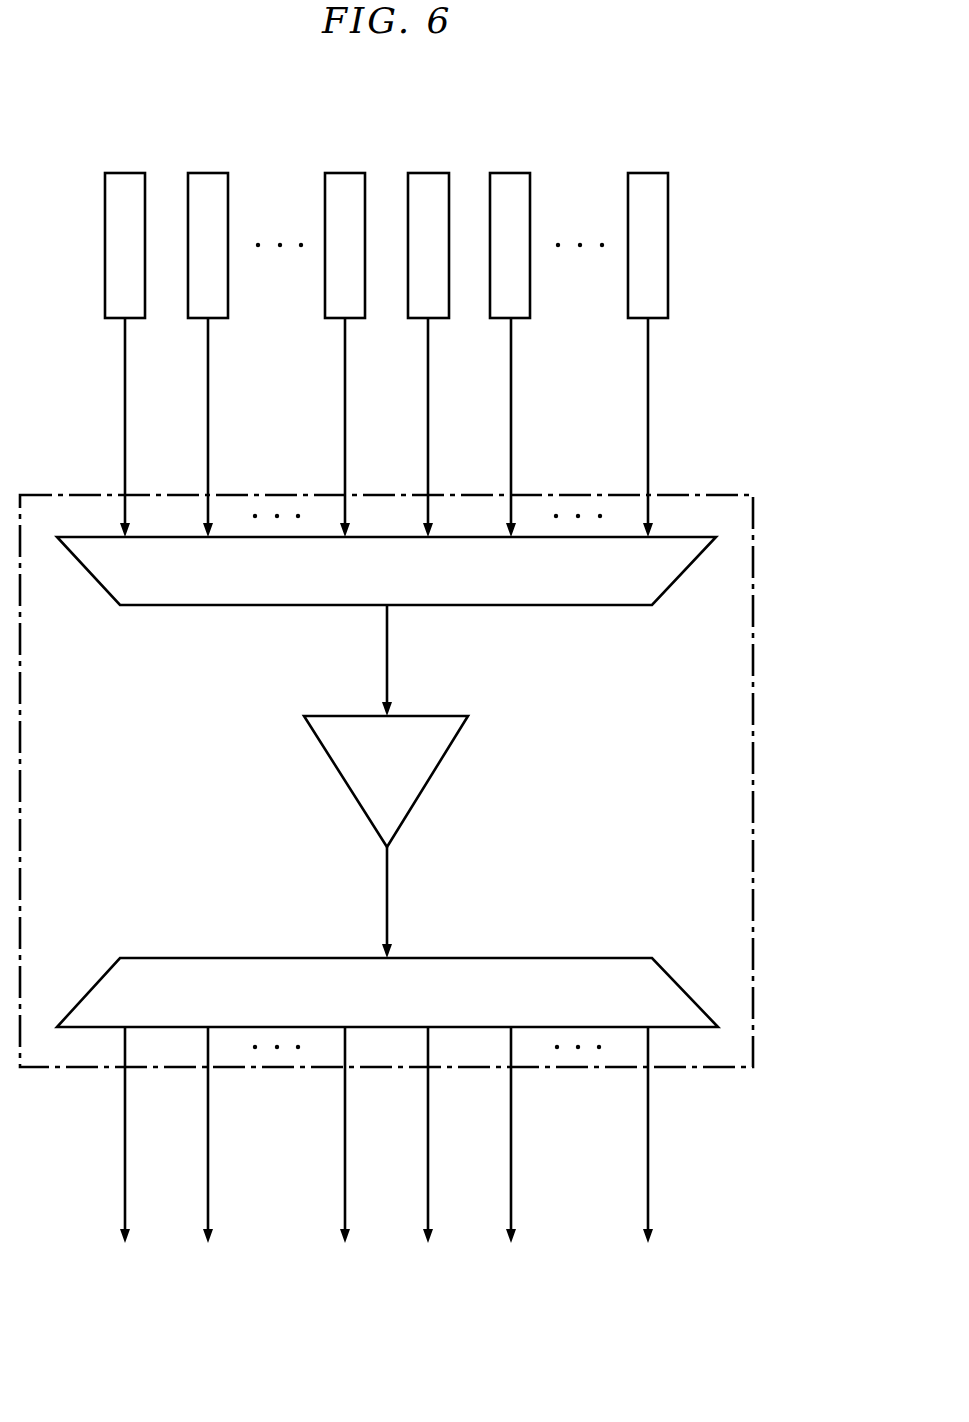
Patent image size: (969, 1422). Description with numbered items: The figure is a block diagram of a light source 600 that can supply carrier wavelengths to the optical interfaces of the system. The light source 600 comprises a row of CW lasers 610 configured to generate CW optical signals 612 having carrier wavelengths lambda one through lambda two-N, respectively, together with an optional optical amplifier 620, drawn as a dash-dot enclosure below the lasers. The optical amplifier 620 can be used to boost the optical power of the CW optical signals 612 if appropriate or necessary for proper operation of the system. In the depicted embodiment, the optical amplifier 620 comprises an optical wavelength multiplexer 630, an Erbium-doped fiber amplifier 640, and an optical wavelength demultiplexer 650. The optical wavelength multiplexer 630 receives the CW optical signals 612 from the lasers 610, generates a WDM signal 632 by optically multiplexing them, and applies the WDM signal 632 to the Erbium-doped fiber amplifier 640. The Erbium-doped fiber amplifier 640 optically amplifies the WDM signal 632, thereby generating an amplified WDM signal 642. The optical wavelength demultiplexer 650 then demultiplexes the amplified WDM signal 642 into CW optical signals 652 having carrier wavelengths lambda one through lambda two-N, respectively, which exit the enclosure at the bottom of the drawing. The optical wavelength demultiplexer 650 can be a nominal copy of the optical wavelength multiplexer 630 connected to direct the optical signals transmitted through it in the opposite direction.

The light source 600 is at (401, 75).
The CW lasers 610 is at (393, 218).
The CW optical signals 612 is at (372, 427).
The optical amplifier 620 is at (685, 495).
The optical wavelength multiplexer 630 is at (580, 605).
The WDM signal 632 is at (387, 662).
The Erbium-doped fiber amplifier 640 is at (440, 763).
The amplified WDM signal 642 is at (387, 907).
The optical wavelength demultiplexer 650 is at (580, 958).
The CW optical signals 652 is at (362, 1154).